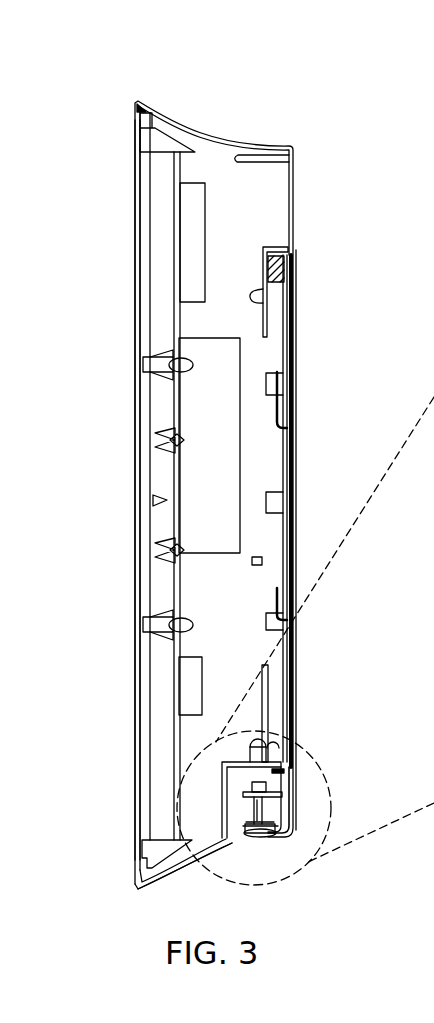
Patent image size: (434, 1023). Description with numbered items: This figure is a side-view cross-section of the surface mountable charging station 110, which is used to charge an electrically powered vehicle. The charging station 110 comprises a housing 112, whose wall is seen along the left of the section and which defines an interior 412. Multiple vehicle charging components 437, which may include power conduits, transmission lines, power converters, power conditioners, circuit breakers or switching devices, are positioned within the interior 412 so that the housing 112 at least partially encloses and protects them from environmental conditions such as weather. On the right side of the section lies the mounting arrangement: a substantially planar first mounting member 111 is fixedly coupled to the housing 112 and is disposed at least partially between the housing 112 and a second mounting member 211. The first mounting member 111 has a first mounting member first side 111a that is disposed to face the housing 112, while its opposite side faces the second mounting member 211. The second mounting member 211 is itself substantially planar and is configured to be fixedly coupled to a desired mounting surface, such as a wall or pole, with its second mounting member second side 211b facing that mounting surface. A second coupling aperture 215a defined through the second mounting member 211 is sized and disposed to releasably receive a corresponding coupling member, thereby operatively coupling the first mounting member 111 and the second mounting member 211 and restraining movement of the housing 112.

The charging station 110 is at (157, 72).
The housing 112 is at (133, 235).
The vehicle charging components 437 is at (193, 218).
The second coupling aperture 215a is at (272, 412).
The first mounting member 111 is at (272, 246).
The first mounting member first side 111a is at (272, 327).
The second mounting member 211 is at (292, 260).
The second mounting member second side 211b is at (295, 288).
The interior 412 is at (265, 465).